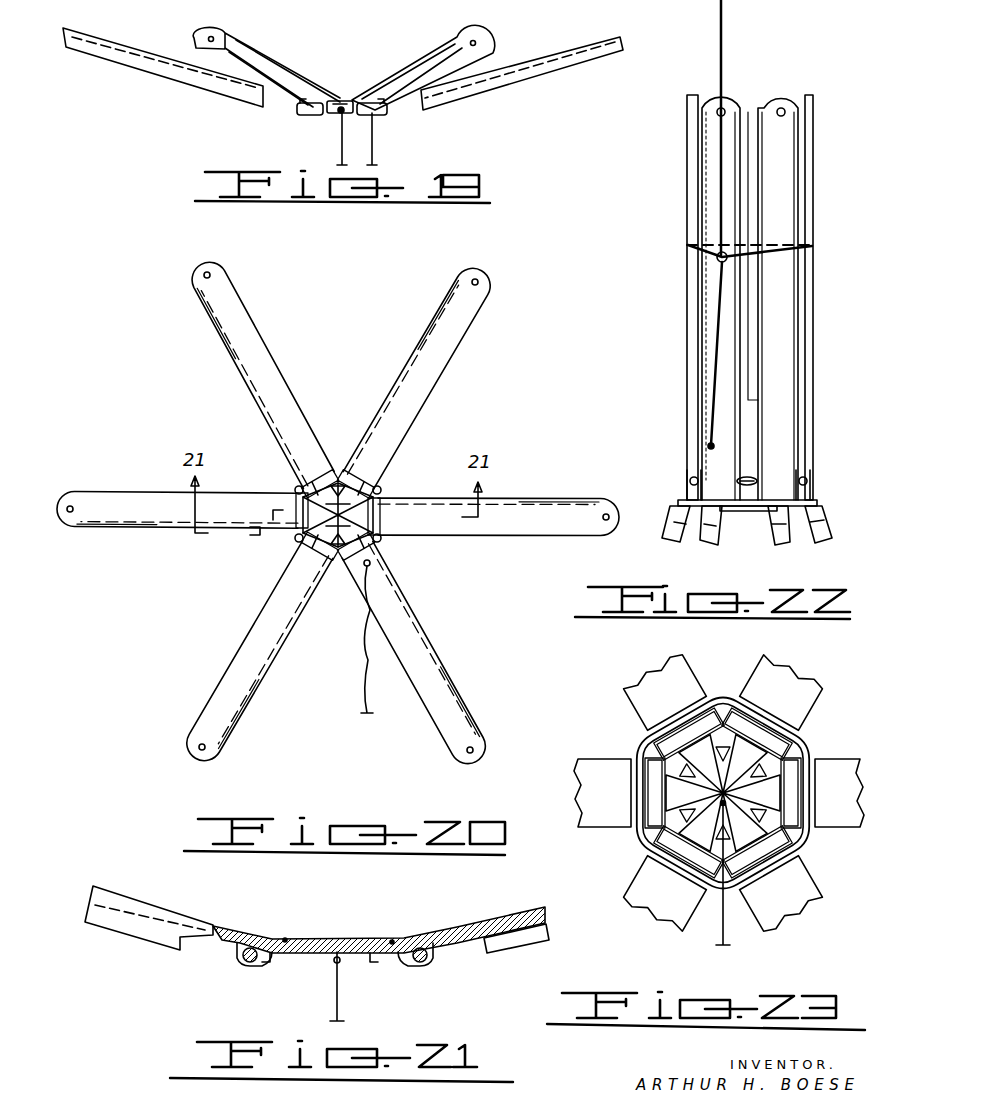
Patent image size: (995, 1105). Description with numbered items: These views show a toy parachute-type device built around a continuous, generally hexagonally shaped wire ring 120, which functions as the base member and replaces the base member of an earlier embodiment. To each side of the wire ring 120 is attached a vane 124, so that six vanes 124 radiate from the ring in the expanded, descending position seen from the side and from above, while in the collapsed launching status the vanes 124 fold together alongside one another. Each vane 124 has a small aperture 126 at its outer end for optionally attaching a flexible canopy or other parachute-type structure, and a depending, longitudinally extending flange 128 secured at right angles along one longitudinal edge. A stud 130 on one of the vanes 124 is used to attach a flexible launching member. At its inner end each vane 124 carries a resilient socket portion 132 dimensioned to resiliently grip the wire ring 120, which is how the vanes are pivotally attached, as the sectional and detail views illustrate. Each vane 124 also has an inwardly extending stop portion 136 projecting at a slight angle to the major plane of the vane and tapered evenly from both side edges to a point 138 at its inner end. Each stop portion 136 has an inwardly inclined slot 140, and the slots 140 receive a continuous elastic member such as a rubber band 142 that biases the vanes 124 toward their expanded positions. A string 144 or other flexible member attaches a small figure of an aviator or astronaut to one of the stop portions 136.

In FIG. 19, the wire ring 120 is at (345, 114).
In FIG. 20, the wire ring 120 is at (296, 488).
In FIG. 22, the wire ring 120 is at (752, 478).
In FIG. 23, the wire ring 120 is at (726, 696).
In FIG. 21, the wire ring 120 is at (247, 962).
In FIG. 19, the vane 124 is at (112, 40).
In FIG. 20, the vane 124 is at (236, 322).
In FIG. 22, the vane 124 is at (786, 152).
In FIG. 23, the vane 124 is at (800, 690).
In FIG. 21, the vane 124 is at (150, 896).
In FIG. 19, the aperture 126 is at (206, 39).
In FIG. 20, the aperture 126 is at (206, 272).
In FIG. 22, the aperture 126 is at (716, 106).
In FIG. 19, the flange 128 is at (130, 66).
In FIG. 20, the flange 128 is at (222, 346).
In FIG. 22, the flange 128 is at (800, 204).
In FIG. 21, the flange 128 is at (128, 932).
In FIG. 19, the stud 130 is at (418, 60).
In FIG. 20, the stud 130 is at (410, 670).
In FIG. 22, the stud 130 is at (716, 258).
In FIG. 19, the socket portion 132 is at (306, 116).
In FIG. 20, the socket portion 132 is at (338, 515).
In FIG. 23, the socket portion 132 is at (796, 722).
In FIG. 21, the socket portion 132 is at (238, 950).
In FIG. 20, the stop portion 136 is at (304, 542).
In FIG. 22, the stop portion 136 is at (686, 482).
In FIG. 23, the stop portion 136 is at (700, 745).
In FIG. 21, the stop portion 136 is at (304, 956).
In FIG. 19, the point 138 is at (342, 100).
In FIG. 20, the point 138 is at (356, 490).
In FIG. 22, the point 138 is at (670, 530).
In FIG. 23, the point 138 is at (732, 782).
In FIG. 21, the point 138 is at (364, 932).
In FIG. 22, the slot 140 is at (678, 502).
In FIG. 21, the slot 140 is at (282, 934).
In FIG. 20, the rubber band 142 is at (372, 500).
In FIG. 22, the rubber band 142 is at (744, 512).
In FIG. 21, the rubber band 142 is at (288, 936).
In FIG. 19, the string 144 is at (340, 148).
In FIG. 23, the string 144 is at (722, 940).
In FIG. 21, the string 144 is at (334, 1005).